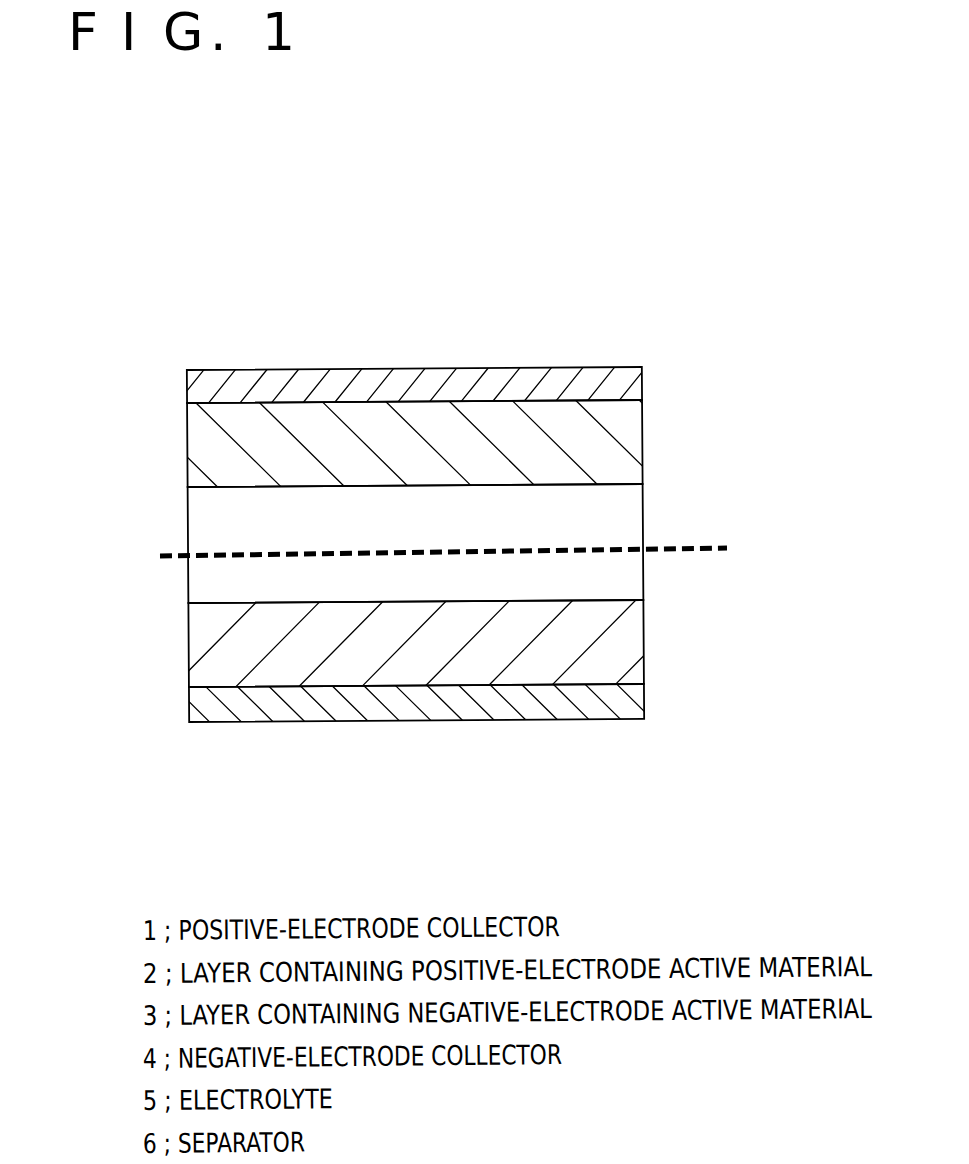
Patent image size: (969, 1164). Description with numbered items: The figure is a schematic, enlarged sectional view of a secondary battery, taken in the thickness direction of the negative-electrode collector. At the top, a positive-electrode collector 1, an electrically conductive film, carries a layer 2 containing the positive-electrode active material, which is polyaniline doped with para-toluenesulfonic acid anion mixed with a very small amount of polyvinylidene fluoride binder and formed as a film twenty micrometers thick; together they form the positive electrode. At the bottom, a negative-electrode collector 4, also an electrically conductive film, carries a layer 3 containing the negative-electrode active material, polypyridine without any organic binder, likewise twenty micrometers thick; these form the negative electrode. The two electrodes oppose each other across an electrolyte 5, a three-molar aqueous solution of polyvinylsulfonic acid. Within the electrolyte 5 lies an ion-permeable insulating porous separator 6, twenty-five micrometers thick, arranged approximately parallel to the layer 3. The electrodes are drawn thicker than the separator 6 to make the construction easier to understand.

The positive-electrode collector 1 is at (388, 371).
The layer containing positive-electrode active material 2 is at (630, 443).
The layer containing negative-electrode active material 3 is at (628, 638).
The negative-electrode collector 4 is at (395, 708).
The electrolyte 5 is at (625, 513).
The separator 6 is at (727, 548).